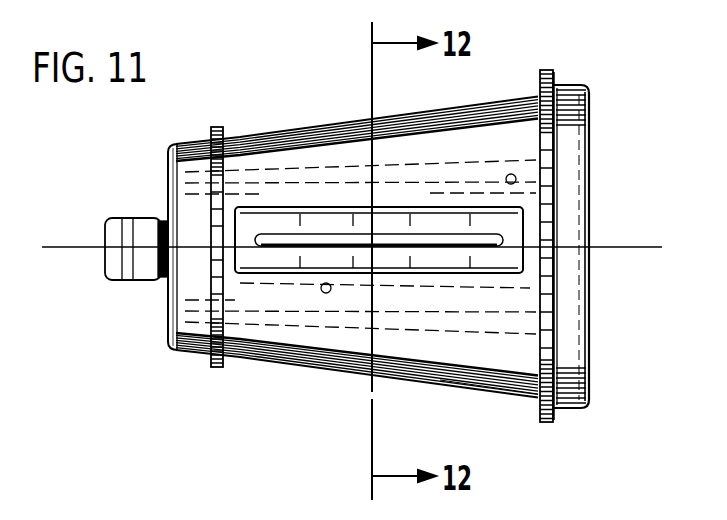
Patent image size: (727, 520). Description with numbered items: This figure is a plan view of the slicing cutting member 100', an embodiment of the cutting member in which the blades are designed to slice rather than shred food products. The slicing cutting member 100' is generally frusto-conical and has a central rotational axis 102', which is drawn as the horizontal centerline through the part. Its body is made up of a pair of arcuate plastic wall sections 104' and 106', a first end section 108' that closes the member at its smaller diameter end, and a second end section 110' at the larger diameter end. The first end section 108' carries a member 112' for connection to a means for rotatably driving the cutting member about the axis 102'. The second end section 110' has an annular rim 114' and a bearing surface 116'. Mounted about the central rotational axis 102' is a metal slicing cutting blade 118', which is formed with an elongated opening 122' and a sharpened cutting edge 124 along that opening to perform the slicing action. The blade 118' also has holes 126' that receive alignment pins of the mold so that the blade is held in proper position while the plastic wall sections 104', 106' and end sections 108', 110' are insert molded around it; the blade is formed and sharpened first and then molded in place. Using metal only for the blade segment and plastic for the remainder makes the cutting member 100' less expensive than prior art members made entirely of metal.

The slicing cutting member 100' is at (374, 243).
The central rotational axis 102' is at (361, 201).
The wall section 104' is at (357, 340).
The wall section 106' is at (357, 141).
The first end section 108' is at (137, 247).
The second end section 110' is at (602, 228).
The connection member 112' is at (106, 230).
The annular rim 114' is at (564, 224).
The bearing surface 116' is at (604, 246).
The slicing cutting blade 118' is at (470, 406).
The elongated opening 122' is at (352, 231).
The sharpened cutting edge 124 is at (250, 232).
The alignment hole 126' is at (389, 232).